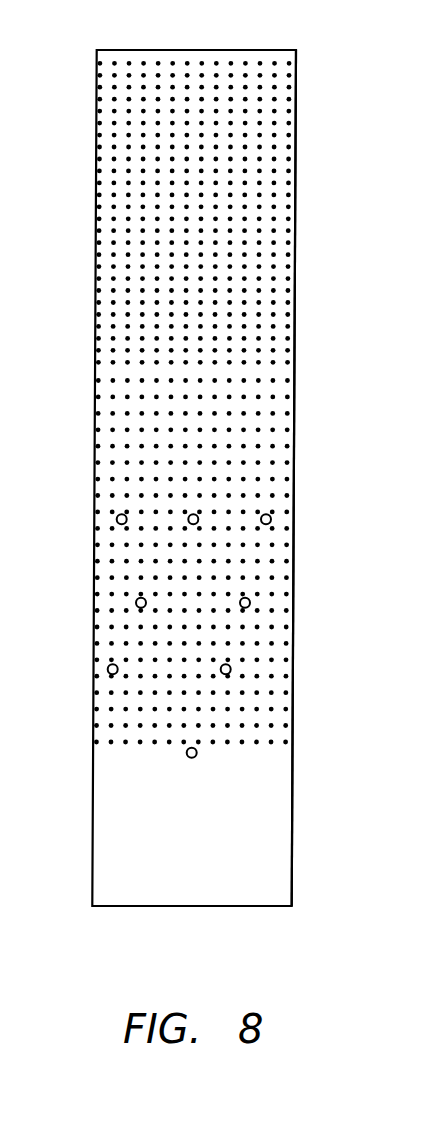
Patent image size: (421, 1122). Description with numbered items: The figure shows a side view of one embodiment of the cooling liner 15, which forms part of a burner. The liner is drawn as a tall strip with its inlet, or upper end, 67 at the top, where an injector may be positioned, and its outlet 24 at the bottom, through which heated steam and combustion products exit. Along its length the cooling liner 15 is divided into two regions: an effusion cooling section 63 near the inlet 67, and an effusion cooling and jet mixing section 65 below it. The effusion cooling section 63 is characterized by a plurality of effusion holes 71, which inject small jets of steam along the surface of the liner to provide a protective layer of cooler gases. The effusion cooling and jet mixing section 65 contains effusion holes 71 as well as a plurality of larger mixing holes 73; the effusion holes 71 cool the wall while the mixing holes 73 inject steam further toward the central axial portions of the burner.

The cooling liner 15 is at (267, 805).
The outlet 24 is at (188, 908).
The effusion cooling section 63 is at (88, 50).
The effusion cooling and jet mixing section 65 is at (88, 365).
The inlet 67 is at (193, 50).
The effusion holes 71 is at (295, 123).
The mixing holes 73 is at (270, 515).